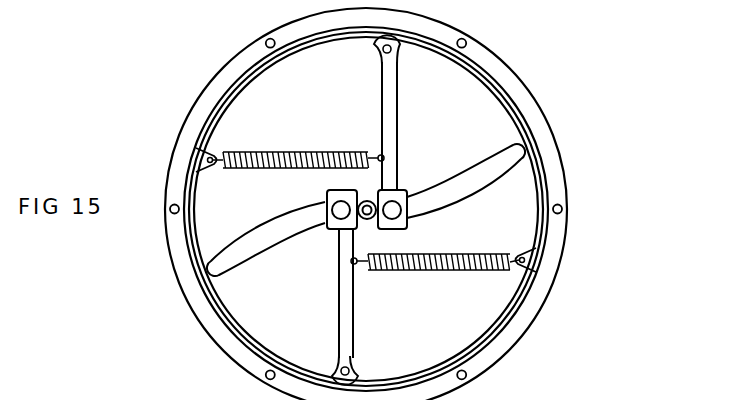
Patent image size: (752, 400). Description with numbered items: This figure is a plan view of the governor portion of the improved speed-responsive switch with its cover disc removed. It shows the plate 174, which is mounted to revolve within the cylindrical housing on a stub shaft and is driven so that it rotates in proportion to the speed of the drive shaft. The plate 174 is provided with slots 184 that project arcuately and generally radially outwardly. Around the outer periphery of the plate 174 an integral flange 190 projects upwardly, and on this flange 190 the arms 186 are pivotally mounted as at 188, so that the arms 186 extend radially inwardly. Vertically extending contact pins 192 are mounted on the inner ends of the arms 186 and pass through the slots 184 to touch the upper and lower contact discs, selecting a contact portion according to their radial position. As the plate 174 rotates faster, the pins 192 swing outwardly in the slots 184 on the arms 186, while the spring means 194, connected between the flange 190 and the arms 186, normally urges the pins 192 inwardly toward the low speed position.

The plate 174 is at (512, 200).
The slots 184 is at (503, 157).
The arms 186 is at (397, 112).
The pivot 188 is at (372, 52).
The flange 190 is at (237, 325).
The contact pins 192 is at (392, 210).
The spring means 194 is at (277, 167).